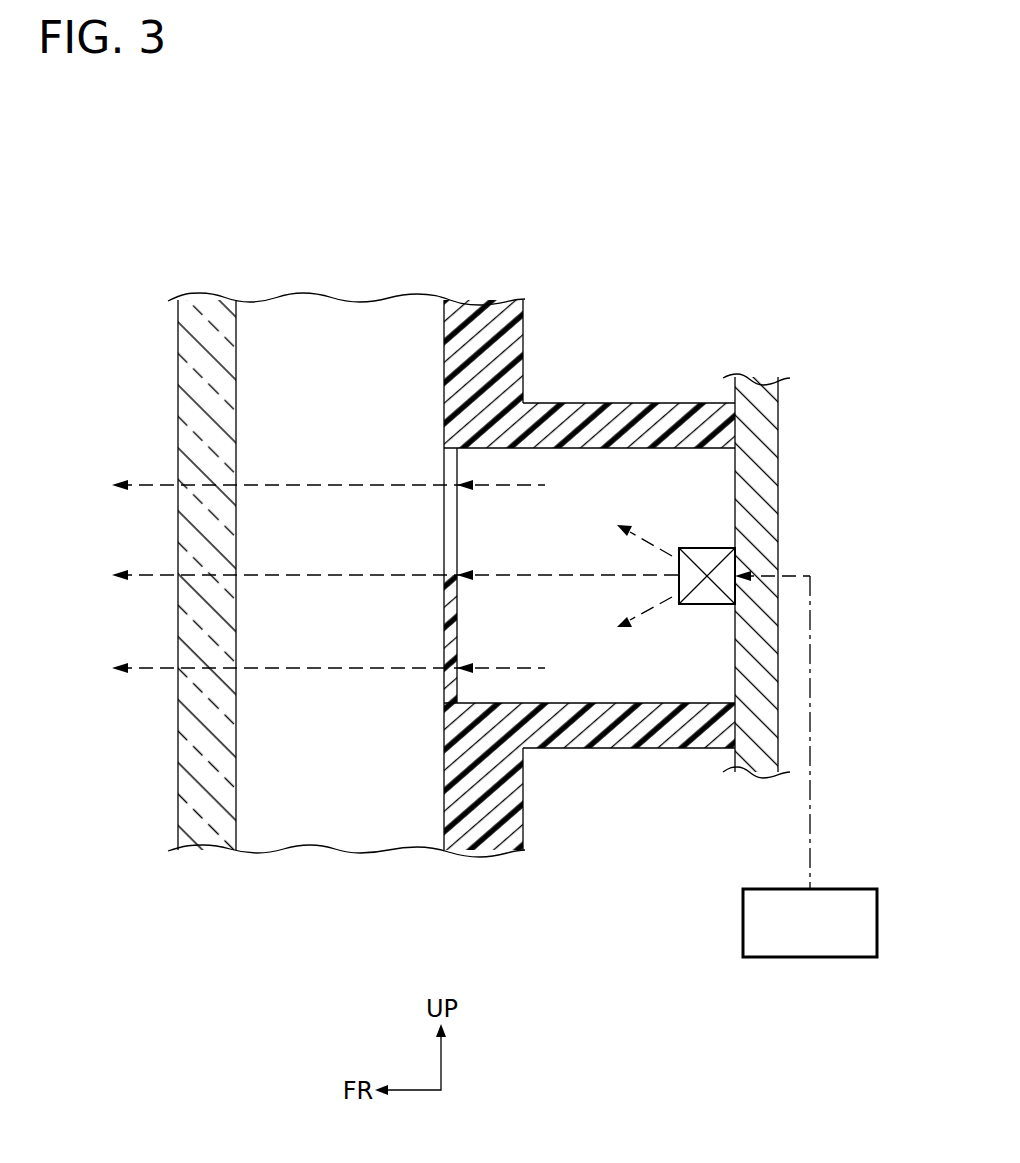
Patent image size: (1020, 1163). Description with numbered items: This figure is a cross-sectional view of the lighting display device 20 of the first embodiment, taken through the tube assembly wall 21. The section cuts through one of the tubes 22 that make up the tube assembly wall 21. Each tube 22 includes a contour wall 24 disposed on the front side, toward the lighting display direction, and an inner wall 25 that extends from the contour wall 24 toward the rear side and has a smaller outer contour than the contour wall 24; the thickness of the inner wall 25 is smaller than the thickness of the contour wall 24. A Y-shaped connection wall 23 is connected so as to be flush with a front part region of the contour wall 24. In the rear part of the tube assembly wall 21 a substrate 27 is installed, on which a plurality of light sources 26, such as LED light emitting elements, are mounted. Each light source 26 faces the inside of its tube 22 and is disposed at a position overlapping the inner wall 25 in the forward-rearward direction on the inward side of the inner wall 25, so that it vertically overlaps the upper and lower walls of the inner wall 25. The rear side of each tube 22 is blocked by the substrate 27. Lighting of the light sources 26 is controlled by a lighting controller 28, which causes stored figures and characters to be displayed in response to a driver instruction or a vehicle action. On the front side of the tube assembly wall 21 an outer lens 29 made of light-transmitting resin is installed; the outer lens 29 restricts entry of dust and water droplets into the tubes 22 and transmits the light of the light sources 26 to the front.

The lighting display device 20 is at (632, 224).
The tube assembly wall 21 is at (544, 546).
The tube 22 is at (544, 546).
The connection wall 23 is at (443, 625).
The contour wall 24 is at (447, 405).
The inner wall 25 is at (652, 410).
The light source 26 is at (714, 542).
The substrate 27 is at (762, 430).
The lighting controller 28 is at (810, 957).
The outer lens 29 is at (180, 357).